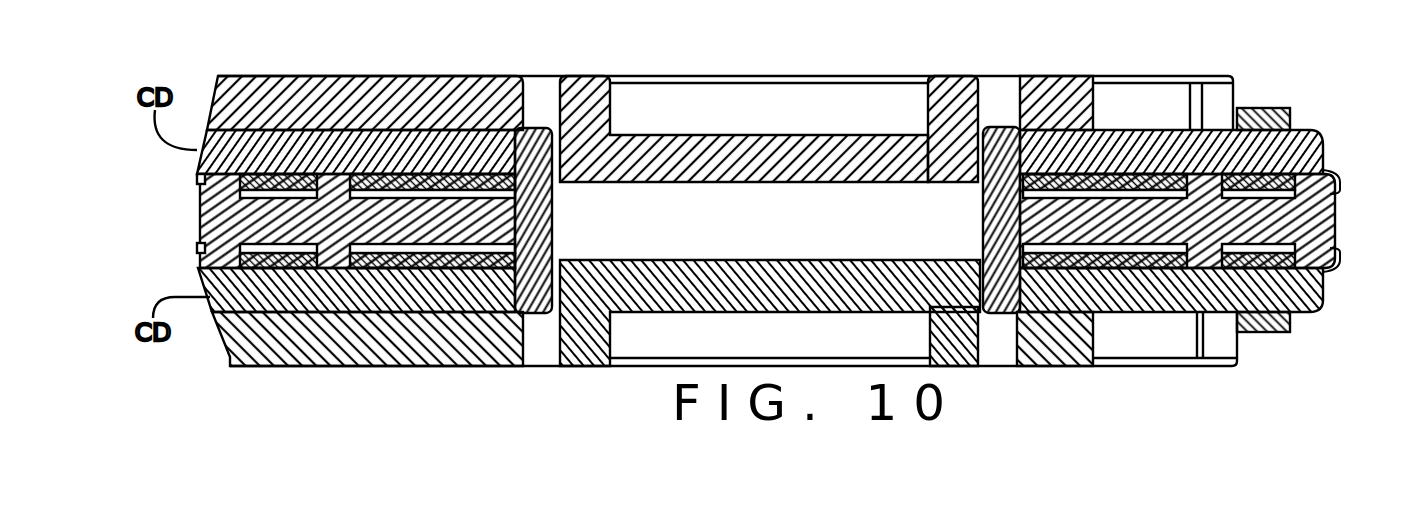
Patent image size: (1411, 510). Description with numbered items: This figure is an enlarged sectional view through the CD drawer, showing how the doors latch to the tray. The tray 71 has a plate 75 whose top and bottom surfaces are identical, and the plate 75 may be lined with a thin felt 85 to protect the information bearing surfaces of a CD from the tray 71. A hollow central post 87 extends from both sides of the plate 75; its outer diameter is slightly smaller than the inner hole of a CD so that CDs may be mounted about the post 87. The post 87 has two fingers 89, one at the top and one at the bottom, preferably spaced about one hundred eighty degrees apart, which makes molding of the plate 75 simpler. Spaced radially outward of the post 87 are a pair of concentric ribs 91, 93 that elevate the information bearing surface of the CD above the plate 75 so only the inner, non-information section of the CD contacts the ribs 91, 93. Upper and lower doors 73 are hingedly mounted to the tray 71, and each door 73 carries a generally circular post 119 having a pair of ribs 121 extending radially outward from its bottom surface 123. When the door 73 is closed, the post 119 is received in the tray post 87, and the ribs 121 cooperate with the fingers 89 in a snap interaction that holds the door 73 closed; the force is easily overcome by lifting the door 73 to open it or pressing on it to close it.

The tray 71 is at (190, 207).
The door 73 is at (449, 70).
The plate 75 is at (480, 312).
The felt 85 is at (1338, 180).
The post 87 is at (555, 238).
The fingers 89 is at (575, 366).
The rib 91 is at (345, 180).
The rib 93 is at (262, 270).
The post 119 is at (700, 190).
The ribs 121 is at (558, 186).
The bottom surface 123 is at (815, 183).